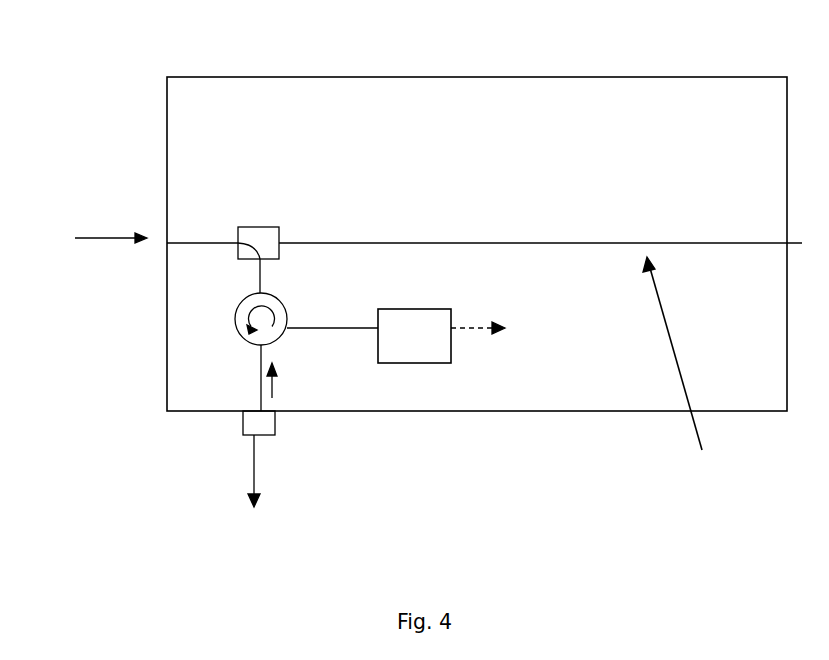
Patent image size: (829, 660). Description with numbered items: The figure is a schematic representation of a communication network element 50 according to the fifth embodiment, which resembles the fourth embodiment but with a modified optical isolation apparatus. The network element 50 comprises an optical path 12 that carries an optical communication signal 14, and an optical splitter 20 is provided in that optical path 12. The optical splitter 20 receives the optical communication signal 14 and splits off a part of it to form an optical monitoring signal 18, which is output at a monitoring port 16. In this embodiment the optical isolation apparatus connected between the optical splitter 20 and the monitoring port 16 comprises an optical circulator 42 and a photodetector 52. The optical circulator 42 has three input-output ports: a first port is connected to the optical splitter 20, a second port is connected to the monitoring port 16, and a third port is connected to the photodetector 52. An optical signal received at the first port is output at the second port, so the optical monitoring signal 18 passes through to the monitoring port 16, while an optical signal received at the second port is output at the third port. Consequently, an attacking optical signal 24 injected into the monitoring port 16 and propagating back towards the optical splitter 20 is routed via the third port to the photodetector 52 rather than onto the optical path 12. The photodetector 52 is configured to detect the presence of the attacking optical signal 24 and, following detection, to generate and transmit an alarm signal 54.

The communication network element 50 is at (682, 115).
The optical path 12 is at (484, 365).
The optical communication signal 14 is at (92, 243).
The optical splitter 20 is at (253, 238).
The optical circulator 42 is at (238, 333).
The photodetector 52 is at (397, 363).
The alarm signal 54 is at (468, 328).
The monitoring port 16 is at (255, 417).
The optical monitoring signal 18 is at (247, 487).
The attacking optical signal 24 is at (273, 381).